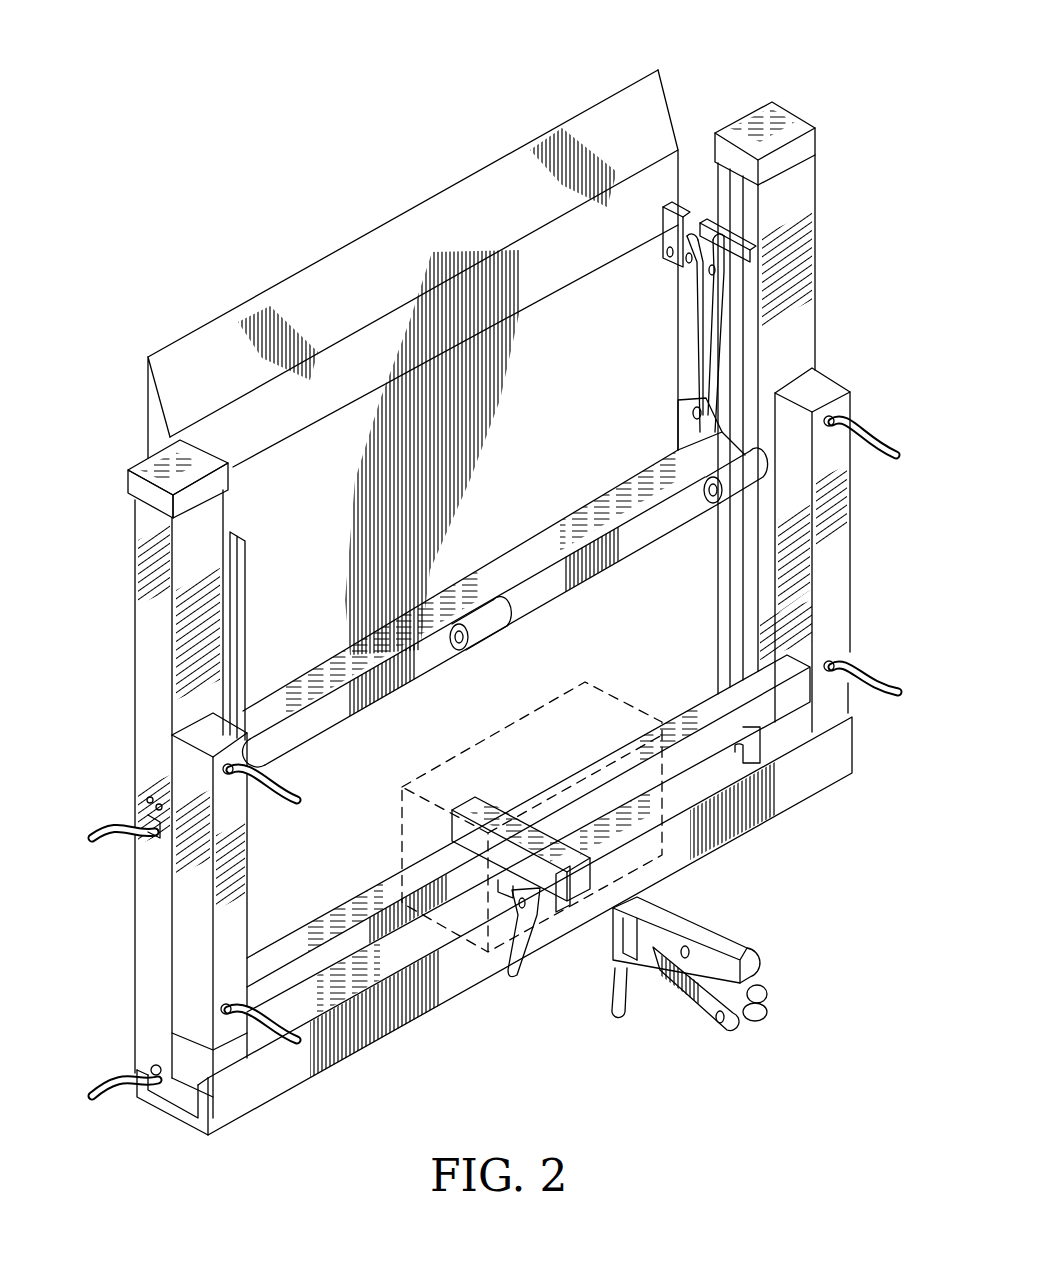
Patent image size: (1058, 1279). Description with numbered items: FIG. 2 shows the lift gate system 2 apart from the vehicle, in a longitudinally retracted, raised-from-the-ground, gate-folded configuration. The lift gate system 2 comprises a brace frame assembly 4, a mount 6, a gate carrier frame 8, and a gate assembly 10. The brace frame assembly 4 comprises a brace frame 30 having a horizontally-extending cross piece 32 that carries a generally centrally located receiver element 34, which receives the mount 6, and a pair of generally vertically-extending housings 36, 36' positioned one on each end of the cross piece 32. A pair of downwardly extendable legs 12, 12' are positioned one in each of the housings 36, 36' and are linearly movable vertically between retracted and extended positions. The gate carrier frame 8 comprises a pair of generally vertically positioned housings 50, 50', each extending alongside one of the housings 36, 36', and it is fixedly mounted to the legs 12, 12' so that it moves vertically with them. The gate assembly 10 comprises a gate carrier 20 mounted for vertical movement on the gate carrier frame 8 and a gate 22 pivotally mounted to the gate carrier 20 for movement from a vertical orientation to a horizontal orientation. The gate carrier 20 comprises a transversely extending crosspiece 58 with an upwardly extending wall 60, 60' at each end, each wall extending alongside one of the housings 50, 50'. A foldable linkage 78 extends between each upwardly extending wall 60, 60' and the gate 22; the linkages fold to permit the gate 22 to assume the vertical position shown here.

The lift gate system 2 is at (816, 94).
The brace frame assembly 4 is at (846, 369).
The mount 6 is at (727, 933).
The gate carrier frame 8 is at (819, 231).
The gate assembly 10 is at (692, 122).
The downwardly extendable leg 12 is at (557, 895).
The downwardly extendable leg 12' is at (161, 1137).
The gate carrier 20 is at (557, 603).
The gate 22 is at (310, 278).
The brace frame 30 is at (498, 801).
The cross piece 32 is at (600, 762).
The receiver element 34 is at (558, 884).
The vertically-extending housing 36 is at (836, 562).
The vertically-extending housing 36' is at (178, 915).
The vertically positioned housing 50 is at (804, 143).
The vertically positioned housing 50' is at (136, 768).
The transversely extending crosspiece 58 is at (411, 633).
The upwardly extending wall 60 is at (676, 326).
The upwardly extending wall 60' is at (285, 636).
The foldable linkage 78 is at (693, 321).